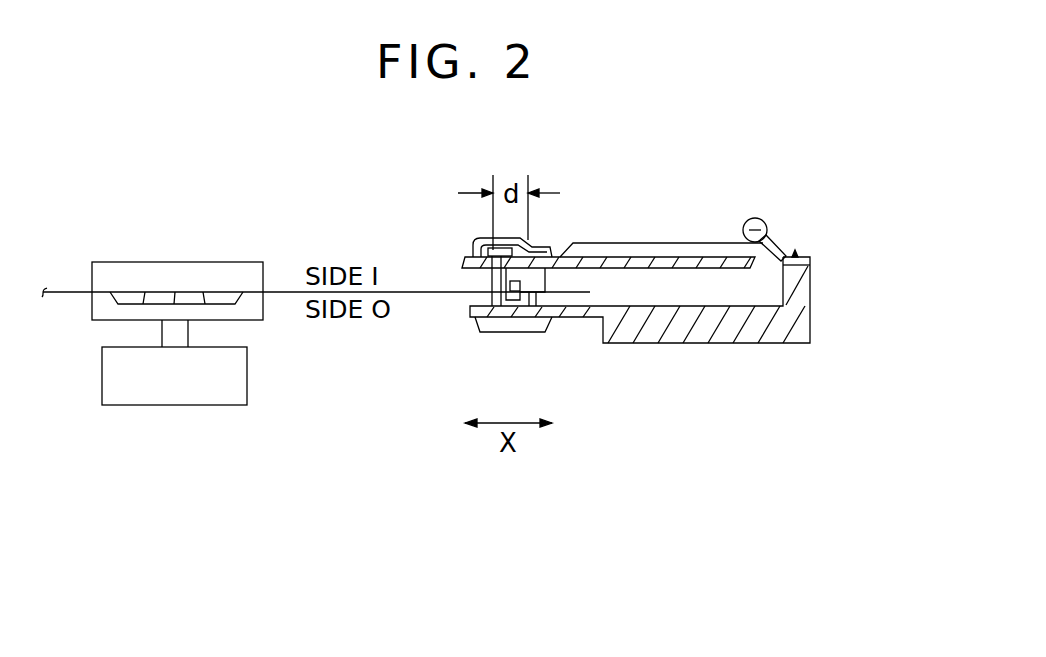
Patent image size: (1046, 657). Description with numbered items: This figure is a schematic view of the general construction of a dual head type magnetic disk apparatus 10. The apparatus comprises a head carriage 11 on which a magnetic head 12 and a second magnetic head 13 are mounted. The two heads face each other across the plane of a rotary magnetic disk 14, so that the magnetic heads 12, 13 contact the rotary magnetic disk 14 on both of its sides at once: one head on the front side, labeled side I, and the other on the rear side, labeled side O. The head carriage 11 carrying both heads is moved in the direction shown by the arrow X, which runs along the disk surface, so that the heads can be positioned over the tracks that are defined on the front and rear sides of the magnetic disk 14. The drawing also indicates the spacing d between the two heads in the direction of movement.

The dual head type magnetic disk apparatus 10 is at (690, 158).
The head carriage 11 is at (722, 335).
The magnetic head 12 is at (483, 281).
The magnetic head 13 is at (483, 297).
The rotary magnetic disk 14 is at (283, 292).